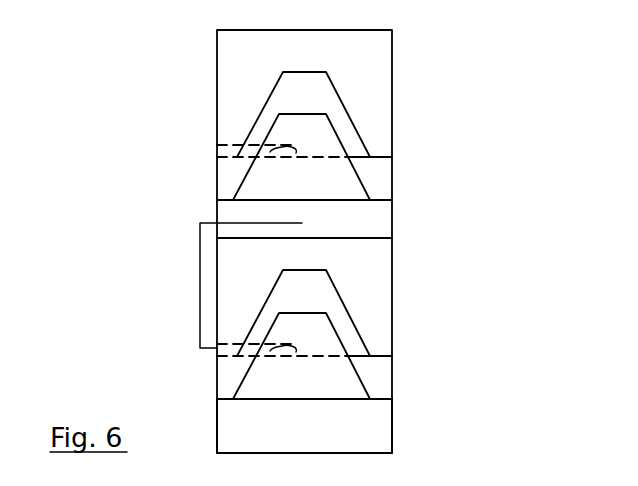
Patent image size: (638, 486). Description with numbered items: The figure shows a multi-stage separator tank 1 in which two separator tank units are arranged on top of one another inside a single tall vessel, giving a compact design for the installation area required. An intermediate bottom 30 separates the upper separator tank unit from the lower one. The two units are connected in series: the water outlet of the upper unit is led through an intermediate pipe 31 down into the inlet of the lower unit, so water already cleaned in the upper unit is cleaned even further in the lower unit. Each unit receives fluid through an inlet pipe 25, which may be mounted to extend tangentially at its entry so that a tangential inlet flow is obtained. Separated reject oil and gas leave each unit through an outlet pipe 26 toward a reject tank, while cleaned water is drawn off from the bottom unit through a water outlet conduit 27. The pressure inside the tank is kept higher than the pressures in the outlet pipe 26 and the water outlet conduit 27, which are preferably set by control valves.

The structure 1 is at (393, 137).
The inlet pipe 25 is at (217, 147).
The outlet pipe 26 is at (302, 59).
The water outlet conduit 27 is at (302, 427).
The intermediate bottom 30 is at (367, 238).
The intermediate pipe 31 is at (200, 290).